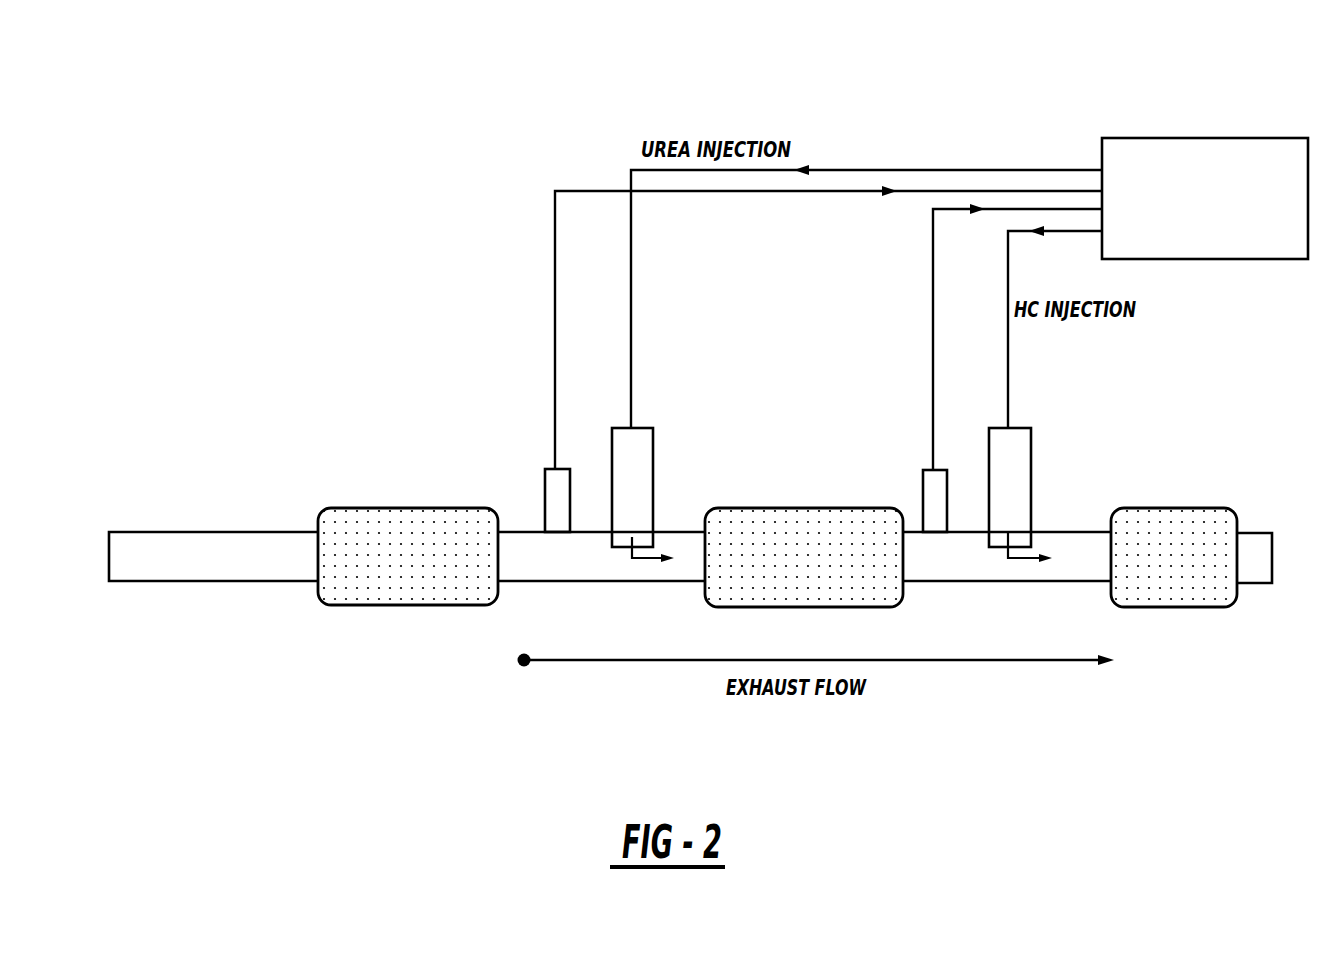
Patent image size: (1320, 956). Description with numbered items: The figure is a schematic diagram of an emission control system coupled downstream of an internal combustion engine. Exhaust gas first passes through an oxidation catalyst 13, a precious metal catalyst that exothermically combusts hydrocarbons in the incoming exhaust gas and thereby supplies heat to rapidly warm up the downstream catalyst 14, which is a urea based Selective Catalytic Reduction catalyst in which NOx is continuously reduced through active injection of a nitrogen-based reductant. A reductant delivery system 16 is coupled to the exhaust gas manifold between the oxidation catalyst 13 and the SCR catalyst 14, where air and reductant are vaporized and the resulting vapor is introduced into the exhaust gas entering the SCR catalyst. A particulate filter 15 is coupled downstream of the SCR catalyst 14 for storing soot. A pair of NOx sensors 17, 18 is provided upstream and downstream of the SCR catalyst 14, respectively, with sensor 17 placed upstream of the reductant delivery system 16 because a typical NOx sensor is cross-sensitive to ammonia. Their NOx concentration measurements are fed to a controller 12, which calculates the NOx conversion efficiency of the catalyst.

The controller 12 is at (1203, 138).
The oxidation catalyst 13 is at (417, 605).
The catalyst 14 is at (830, 607).
The particulate filter 15 is at (1198, 607).
The reductant delivery system 16 is at (653, 468).
The NOx sensor 17 is at (545, 469).
The NOx sensor 18 is at (923, 470).